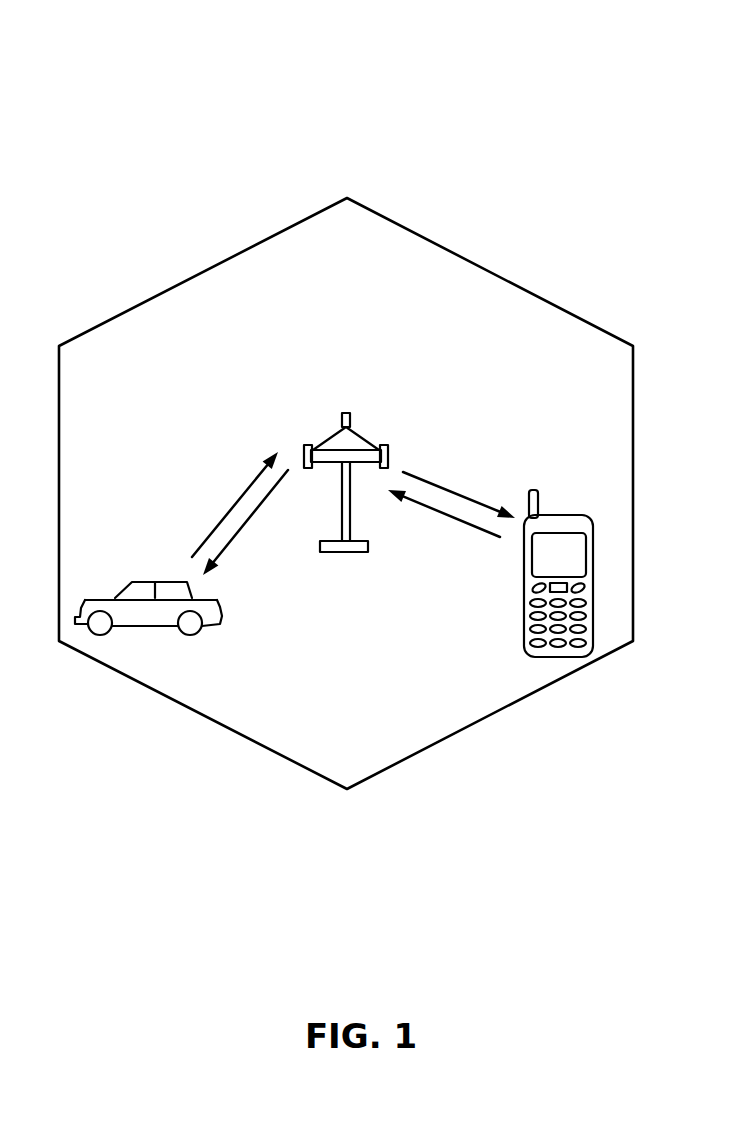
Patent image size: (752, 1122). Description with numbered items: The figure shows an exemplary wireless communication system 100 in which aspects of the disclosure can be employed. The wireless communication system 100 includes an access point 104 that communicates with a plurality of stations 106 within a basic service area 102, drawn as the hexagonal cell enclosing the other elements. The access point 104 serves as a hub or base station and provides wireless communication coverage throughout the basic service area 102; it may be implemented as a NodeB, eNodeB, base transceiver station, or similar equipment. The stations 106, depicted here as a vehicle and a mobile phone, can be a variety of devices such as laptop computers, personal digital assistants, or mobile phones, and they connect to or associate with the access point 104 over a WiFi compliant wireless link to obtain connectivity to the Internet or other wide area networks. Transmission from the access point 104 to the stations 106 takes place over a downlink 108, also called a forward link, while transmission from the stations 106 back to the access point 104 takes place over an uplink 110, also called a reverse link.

The wireless communication system 100 is at (378, 402).
The basic service area 102 is at (425, 238).
The access point 104 is at (345, 410).
The stations 106 is at (150, 580).
The downlink 108 is at (420, 473).
The uplink 110 is at (432, 508).